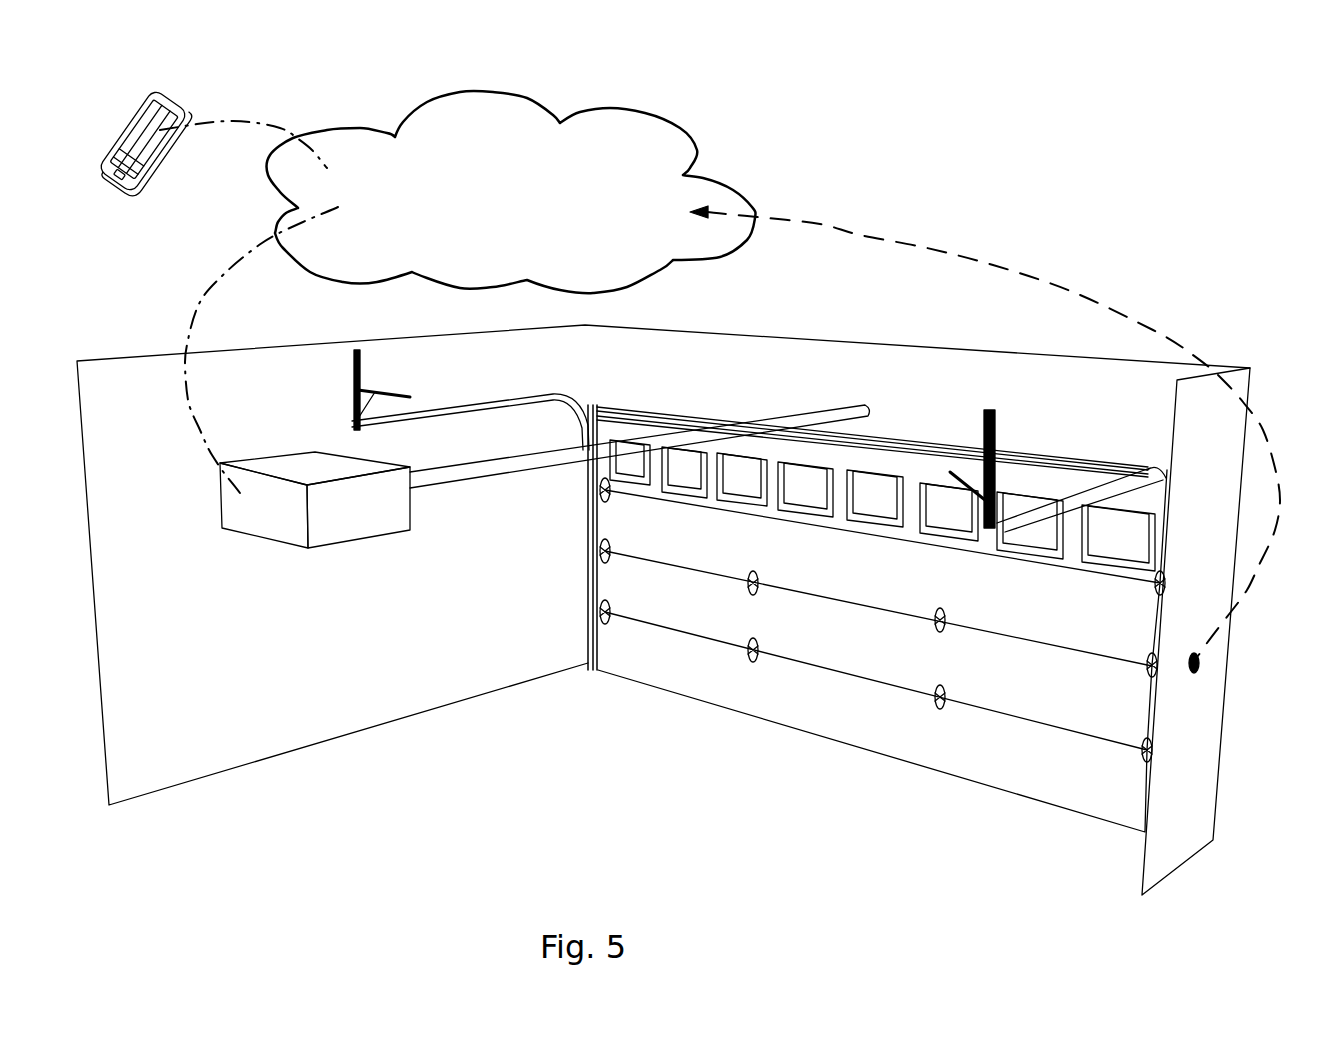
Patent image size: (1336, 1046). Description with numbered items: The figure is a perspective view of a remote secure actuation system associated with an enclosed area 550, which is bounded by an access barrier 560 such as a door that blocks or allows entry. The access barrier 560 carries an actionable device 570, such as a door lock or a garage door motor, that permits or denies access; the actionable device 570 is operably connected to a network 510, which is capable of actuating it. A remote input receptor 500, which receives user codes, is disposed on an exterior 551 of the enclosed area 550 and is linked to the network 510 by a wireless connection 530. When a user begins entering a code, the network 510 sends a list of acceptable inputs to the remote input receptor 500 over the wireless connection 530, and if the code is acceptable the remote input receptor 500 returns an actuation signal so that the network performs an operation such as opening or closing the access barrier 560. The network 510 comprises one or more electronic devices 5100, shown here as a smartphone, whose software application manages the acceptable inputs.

The electronic device 5100 is at (143, 115).
The network 510 is at (511, 192).
The wireless connection 530 is at (1000, 272).
The actionable device 570 is at (355, 512).
The access barrier 560 is at (877, 618).
The enclosed area 550 is at (612, 844).
The remote input receptor 500 is at (1198, 663).
The exterior 551 is at (1182, 820).